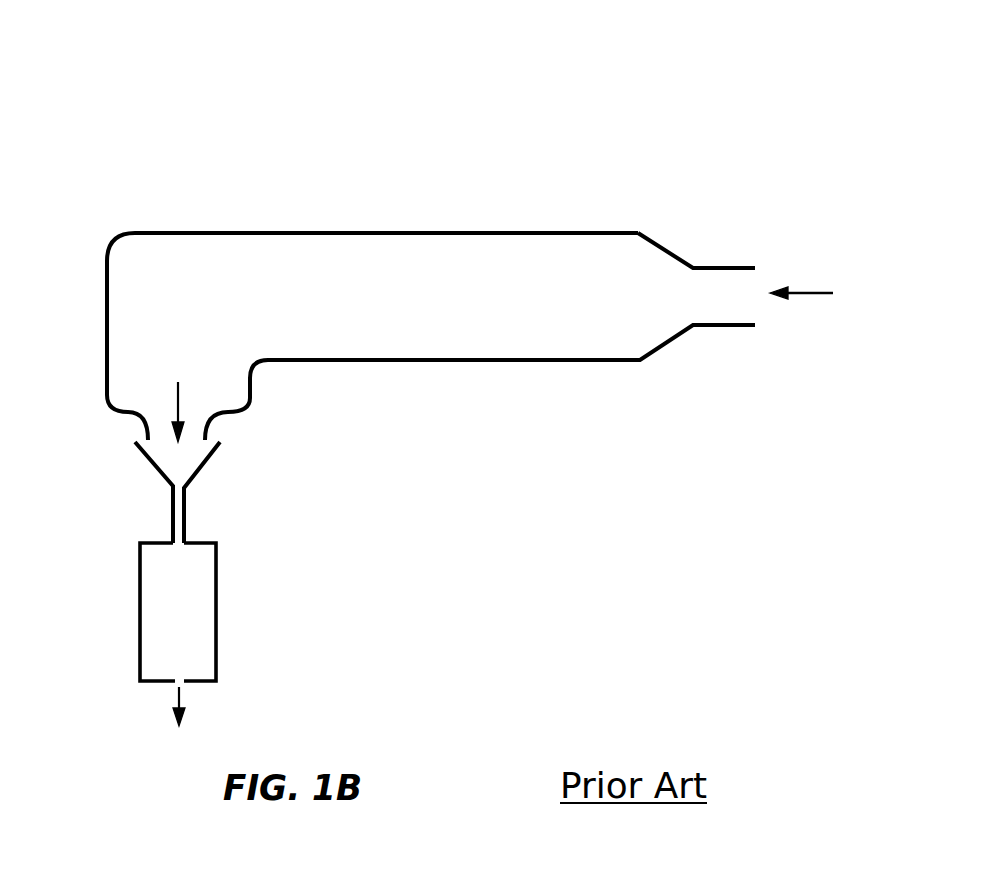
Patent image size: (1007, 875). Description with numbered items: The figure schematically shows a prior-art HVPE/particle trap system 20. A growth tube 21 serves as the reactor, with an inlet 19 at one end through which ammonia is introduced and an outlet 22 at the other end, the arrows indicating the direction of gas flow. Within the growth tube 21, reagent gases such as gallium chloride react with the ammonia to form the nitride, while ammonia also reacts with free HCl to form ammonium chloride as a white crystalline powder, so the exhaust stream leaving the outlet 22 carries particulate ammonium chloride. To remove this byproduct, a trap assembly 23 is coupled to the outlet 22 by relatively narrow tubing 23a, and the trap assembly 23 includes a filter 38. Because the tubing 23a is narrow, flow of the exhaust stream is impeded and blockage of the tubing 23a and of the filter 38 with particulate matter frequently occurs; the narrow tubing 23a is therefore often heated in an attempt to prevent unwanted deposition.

The inlet 19 is at (753, 283).
The HVPE/particle trap system 20 is at (562, 125).
The growth tube 21 is at (475, 233).
The outlet 22 is at (163, 438).
The trap assembly 23 is at (216, 550).
The narrow tubing 23a is at (185, 513).
The filter 38 is at (177, 640).